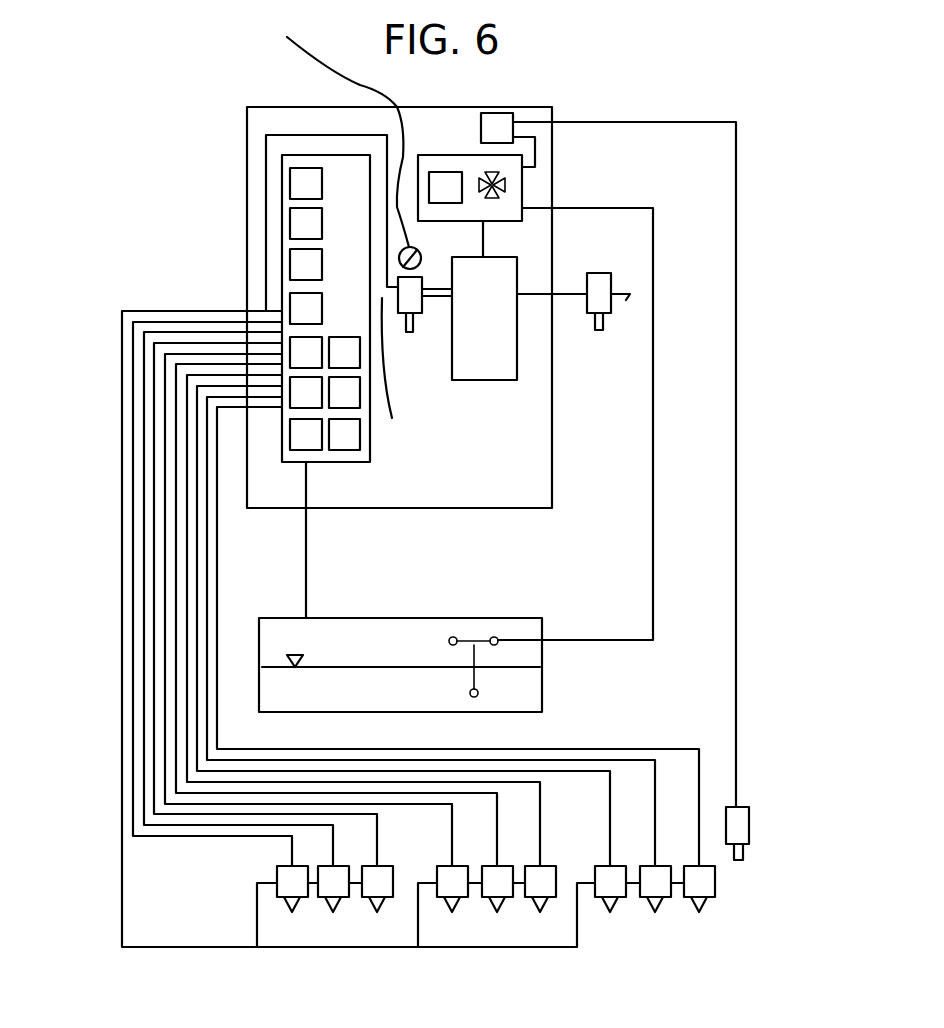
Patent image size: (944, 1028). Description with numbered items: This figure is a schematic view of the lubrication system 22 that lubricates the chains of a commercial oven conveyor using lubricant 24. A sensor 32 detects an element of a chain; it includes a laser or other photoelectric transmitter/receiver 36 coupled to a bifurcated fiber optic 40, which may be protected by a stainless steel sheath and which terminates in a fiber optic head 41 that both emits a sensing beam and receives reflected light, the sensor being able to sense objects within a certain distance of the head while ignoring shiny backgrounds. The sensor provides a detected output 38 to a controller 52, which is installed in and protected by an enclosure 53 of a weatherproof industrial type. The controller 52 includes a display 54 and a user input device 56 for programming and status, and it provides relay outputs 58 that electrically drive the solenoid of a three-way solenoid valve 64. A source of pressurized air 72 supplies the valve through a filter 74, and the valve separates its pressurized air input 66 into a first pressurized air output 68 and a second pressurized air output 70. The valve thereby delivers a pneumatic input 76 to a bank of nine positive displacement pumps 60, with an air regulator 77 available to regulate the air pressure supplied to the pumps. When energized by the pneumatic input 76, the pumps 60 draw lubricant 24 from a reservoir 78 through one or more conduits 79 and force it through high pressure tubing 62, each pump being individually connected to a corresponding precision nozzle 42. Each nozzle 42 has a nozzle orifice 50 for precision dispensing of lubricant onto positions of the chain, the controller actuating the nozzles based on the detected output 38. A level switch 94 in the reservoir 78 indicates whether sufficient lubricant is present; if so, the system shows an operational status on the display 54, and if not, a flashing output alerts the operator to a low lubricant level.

The lubrication system 22 is at (155, 72).
The lubricant 24 is at (520, 690).
The sensor 32 is at (727, 86).
The transmitter/receiver 36 is at (493, 122).
The detected output 38 is at (540, 147).
The bifurcated fiber optic 40 is at (737, 590).
The fiber optic head 41 is at (750, 826).
The nozzle 42 is at (715, 883).
The nozzle orifice 50 is at (655, 912).
The controller 52 is at (448, 155).
The enclosure 53 is at (247, 220).
The display 54 is at (438, 171).
The user input device 56 is at (506, 185).
The relay outputs 58 is at (477, 233).
The positive displacement pump 60 is at (300, 272).
The high pressure tubing 62 is at (165, 503).
The three-way solenoid valve 64 is at (515, 372).
The pressurized air input 66 is at (527, 295).
The first pressurized air output 68 is at (430, 283).
The second pressurized air output 70 is at (292, 135).
The source of pressurized air 72 is at (618, 288).
The filter 74 is at (603, 327).
The pneumatic input 76 is at (400, 372).
The air regulator 77 is at (337, 139).
The reservoir 78 is at (438, 618).
The conduit 79 is at (297, 575).
The level switch 94 is at (468, 640).